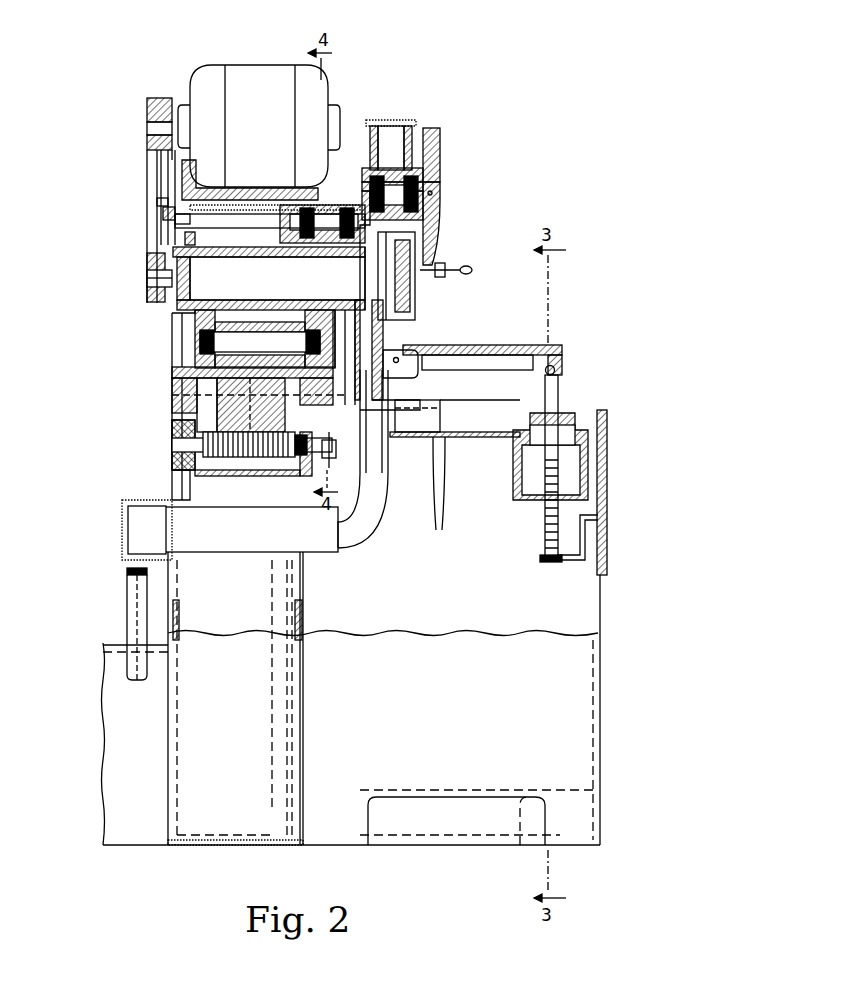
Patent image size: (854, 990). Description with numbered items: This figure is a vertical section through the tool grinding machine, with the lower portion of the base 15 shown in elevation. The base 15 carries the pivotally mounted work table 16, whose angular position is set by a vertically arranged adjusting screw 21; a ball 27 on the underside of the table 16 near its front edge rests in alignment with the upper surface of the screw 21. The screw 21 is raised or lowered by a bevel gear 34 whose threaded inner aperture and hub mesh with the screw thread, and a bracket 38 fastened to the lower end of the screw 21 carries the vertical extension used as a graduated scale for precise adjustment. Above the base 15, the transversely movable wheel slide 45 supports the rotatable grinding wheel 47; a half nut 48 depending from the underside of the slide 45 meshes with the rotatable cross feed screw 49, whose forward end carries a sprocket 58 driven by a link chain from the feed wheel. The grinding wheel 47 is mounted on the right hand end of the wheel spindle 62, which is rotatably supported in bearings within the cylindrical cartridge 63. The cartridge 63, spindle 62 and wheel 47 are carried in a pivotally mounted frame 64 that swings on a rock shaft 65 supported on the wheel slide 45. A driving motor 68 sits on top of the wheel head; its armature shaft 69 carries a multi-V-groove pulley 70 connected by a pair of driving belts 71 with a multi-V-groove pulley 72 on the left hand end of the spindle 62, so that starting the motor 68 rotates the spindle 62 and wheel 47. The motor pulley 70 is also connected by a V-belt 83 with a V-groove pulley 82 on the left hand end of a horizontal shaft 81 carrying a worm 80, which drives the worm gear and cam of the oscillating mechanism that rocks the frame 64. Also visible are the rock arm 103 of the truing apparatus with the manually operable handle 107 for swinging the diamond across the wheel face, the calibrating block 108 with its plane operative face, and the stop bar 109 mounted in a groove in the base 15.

The base 15 is at (600, 698).
The work table 16 is at (513, 345).
The adjusting screw 21 is at (542, 542).
The ball 27 is at (557, 369).
The bevel gear 34 is at (515, 470).
The bracket 38 is at (585, 562).
The wheel slide 45 is at (172, 372).
The grinding wheel 47 is at (420, 302).
The half nut 48 is at (217, 410).
The cross feed screw 49 is at (228, 458).
The sprocket 58 is at (326, 458).
The wheel spindle 62 is at (147, 278).
The cylindrical cartridge 63 is at (178, 298).
The pivotally mounted frame 64 is at (165, 245).
The rock shaft 65 is at (253, 348).
The driving motor 68 is at (211, 78).
The motor armature shaft 69 is at (147, 126).
The multi-V-groove pulley 70 is at (147, 103).
The driving belts 71 is at (168, 203).
The multi-V-groove pulley 72 is at (147, 256).
The worm 80 is at (368, 190).
The horizontal shaft 81 is at (362, 206).
The V-groove pulley 82 is at (157, 203).
The V-belt 83 is at (160, 157).
The rock arm 103 is at (440, 215).
The manually operable handle 107 is at (472, 269).
The calibrating block 108 is at (441, 150).
The stop bar 109 is at (395, 345).